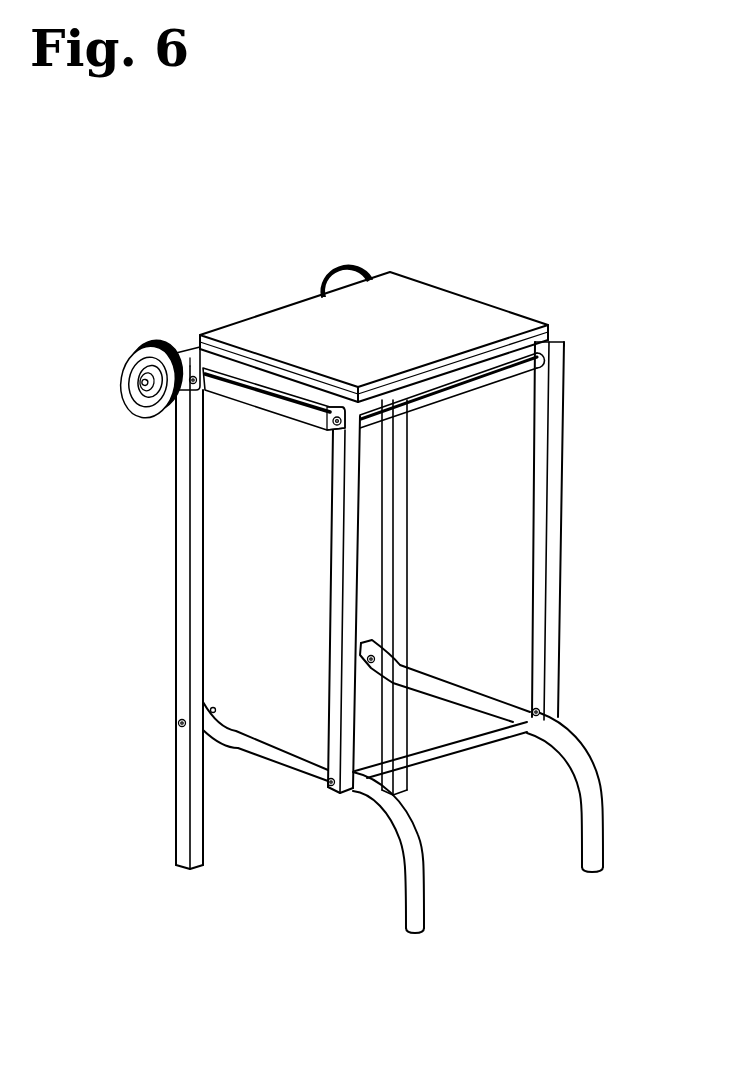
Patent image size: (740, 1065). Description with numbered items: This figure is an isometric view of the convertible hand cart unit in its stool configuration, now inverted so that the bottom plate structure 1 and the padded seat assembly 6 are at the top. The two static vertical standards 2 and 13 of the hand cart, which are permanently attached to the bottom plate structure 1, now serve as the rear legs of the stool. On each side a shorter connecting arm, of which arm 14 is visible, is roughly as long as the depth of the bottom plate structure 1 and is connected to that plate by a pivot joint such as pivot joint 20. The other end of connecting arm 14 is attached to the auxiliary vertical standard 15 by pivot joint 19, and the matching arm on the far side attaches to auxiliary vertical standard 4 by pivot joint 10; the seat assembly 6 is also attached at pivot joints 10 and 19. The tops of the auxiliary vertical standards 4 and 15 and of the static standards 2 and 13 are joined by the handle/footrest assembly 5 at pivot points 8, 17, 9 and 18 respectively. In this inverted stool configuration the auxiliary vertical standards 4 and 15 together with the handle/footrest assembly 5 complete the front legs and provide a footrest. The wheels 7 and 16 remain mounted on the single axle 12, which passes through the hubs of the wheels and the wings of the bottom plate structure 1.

The bottom plate structure 1 is at (192, 352).
The static vertical standard 2 is at (400, 561).
The auxiliary vertical standard 4 is at (560, 530).
The handle/footrest assembly 5 is at (586, 779).
The padded seat assembly 6 is at (340, 331).
The wheel 7 is at (334, 281).
The pivot point 8 is at (540, 712).
The pivot point 9 is at (368, 659).
The pivot joint 10 is at (547, 354).
The axle 12 is at (143, 385).
The static vertical standard 13 is at (195, 579).
The shorter connecting arm 14 is at (263, 398).
The auxiliary vertical standard 15 is at (338, 547).
The wheel 16 is at (127, 363).
The pivot point 17 is at (329, 784).
The pivot point 18 is at (179, 724).
The pivot joint 19 is at (331, 428).
The pivot joint 20 is at (190, 382).